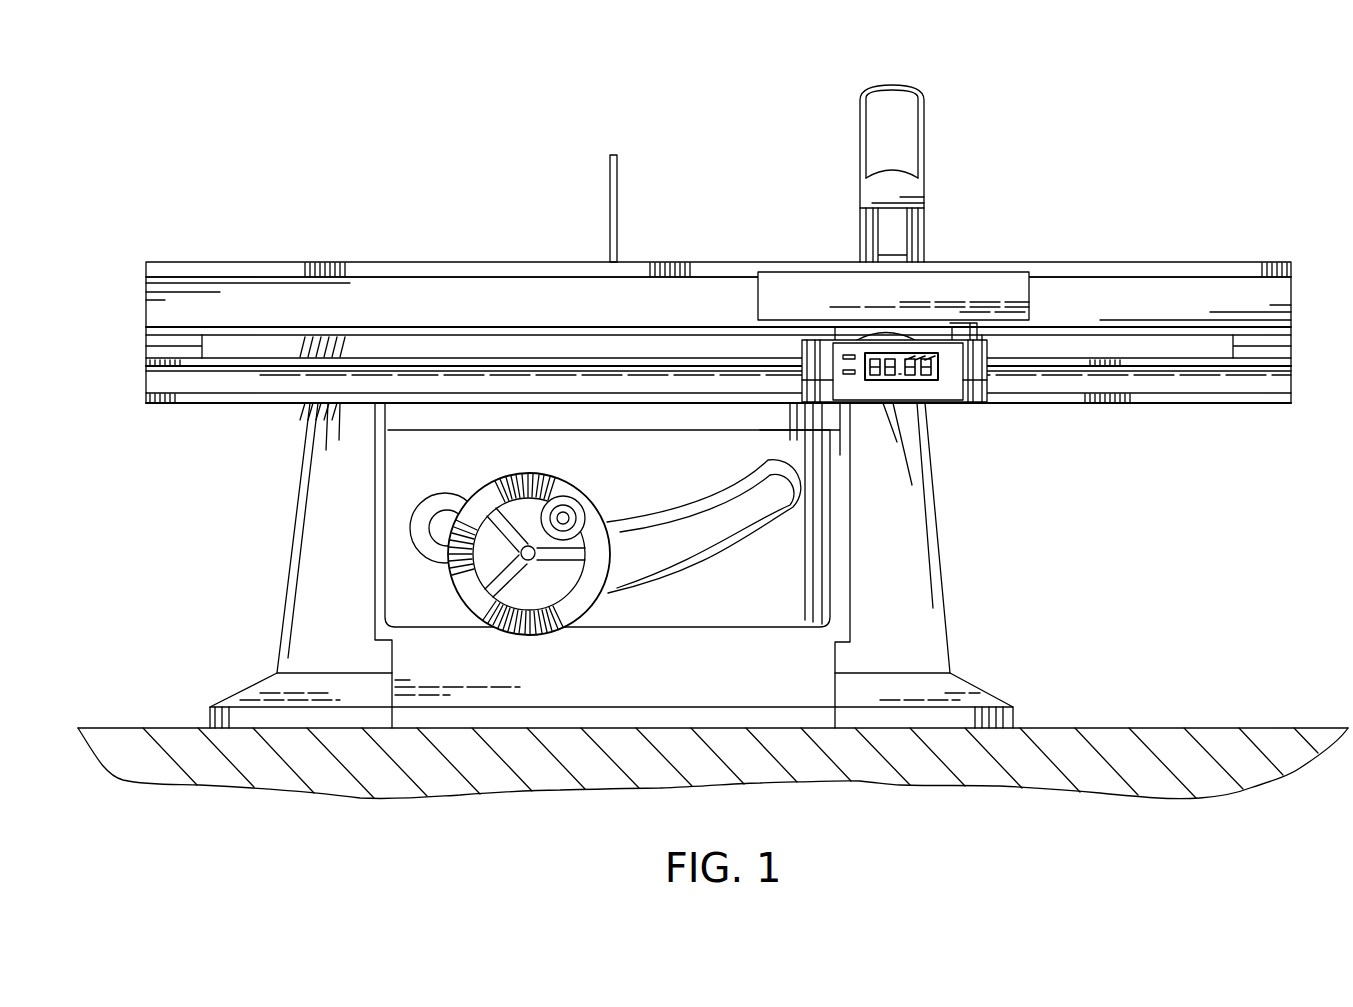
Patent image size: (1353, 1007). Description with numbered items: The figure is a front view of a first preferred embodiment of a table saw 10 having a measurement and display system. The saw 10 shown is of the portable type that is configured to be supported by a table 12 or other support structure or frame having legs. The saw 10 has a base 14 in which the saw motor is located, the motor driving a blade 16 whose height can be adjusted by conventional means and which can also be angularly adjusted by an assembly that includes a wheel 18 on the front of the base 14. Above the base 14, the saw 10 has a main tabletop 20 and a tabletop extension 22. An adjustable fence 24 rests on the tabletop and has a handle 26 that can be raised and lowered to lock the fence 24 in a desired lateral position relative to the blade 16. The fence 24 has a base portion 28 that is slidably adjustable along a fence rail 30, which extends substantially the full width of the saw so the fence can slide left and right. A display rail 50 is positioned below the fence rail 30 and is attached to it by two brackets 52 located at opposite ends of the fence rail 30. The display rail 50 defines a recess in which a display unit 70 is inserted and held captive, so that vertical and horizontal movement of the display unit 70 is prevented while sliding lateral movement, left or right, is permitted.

The table saw 10 is at (724, 406).
The table 12 is at (1130, 768).
The base 14 is at (902, 567).
The blade 16 is at (617, 172).
The wheel 18 is at (548, 486).
The main tabletop 20 is at (490, 260).
The tabletop extension 22 is at (1138, 260).
The adjustable fence 24 is at (930, 236).
The handle 26 is at (890, 128).
The base portion 28 is at (800, 292).
The fence rail 30 is at (392, 312).
The display rail 50 is at (272, 378).
The brackets 52 is at (146, 346).
The display unit 70 is at (950, 410).